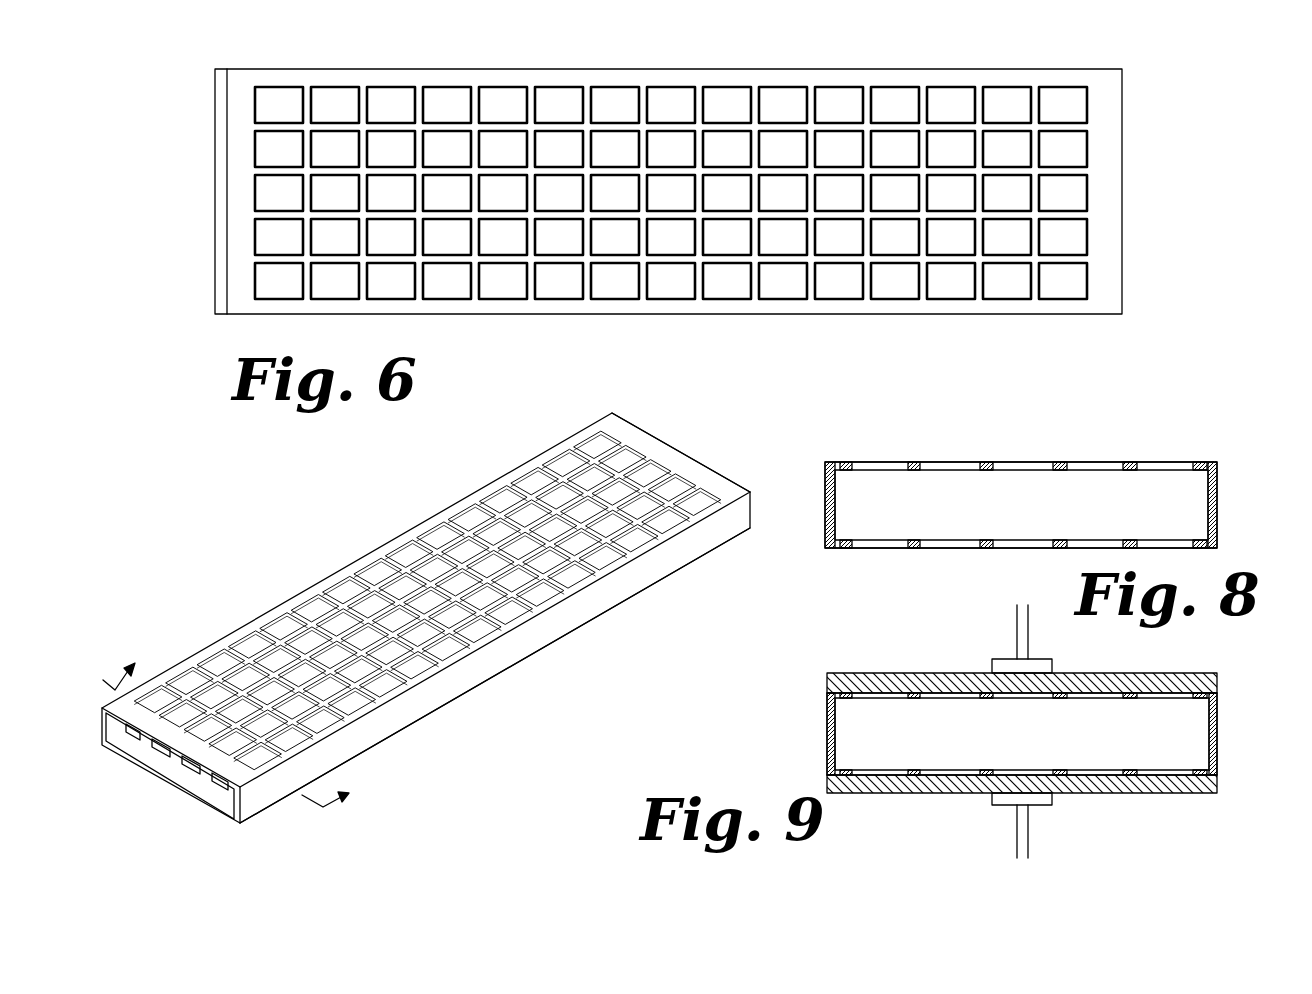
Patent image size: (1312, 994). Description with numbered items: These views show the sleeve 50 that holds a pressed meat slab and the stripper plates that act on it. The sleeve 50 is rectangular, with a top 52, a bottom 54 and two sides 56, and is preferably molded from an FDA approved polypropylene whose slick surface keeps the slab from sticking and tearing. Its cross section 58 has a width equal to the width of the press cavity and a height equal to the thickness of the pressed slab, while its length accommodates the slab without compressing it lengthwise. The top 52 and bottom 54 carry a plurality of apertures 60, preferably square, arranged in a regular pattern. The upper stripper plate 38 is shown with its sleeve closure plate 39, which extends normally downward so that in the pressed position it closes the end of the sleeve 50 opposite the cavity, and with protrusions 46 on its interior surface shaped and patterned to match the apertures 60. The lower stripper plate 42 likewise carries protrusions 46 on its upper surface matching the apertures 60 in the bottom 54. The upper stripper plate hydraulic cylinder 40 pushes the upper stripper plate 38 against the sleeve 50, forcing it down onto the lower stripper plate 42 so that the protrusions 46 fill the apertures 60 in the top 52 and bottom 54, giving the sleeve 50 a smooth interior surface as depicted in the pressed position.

In FIG. 6, the upper stripper plate 38 is at (712, 70).
In FIG. 9, the upper stripper plate 38 is at (1185, 673).
In FIG. 6, the sleeve closure plate 39 is at (214, 240).
In FIG. 9, the upper stripper plate hydraulic cylinder 40 is at (1015, 612).
In FIG. 9, the lower stripper plate 42 is at (1150, 803).
In FIG. 6, the protrusions 46 is at (500, 100).
In FIG. 9, the protrusions 46 is at (1083, 697).
In FIG. 7, the sleeve 50 is at (400, 631).
In FIG. 8, the sleeve 50 is at (1050, 499).
In FIG. 9, the sleeve 50 is at (1049, 747).
In FIG. 7, the top 52 is at (680, 458).
In FIG. 8, the top 52 is at (917, 462).
In FIG. 7, the bottom 54 is at (180, 778).
In FIG. 8, the bottom 54 is at (942, 548).
In FIG. 7, the sides 56 is at (100, 728).
In FIG. 8, the sides 56 is at (1217, 505).
In FIG. 8, the cross section 58 is at (1140, 495).
In FIG. 7, the apertures 60 is at (503, 494).
In FIG. 8, the apertures 60 is at (1002, 462).